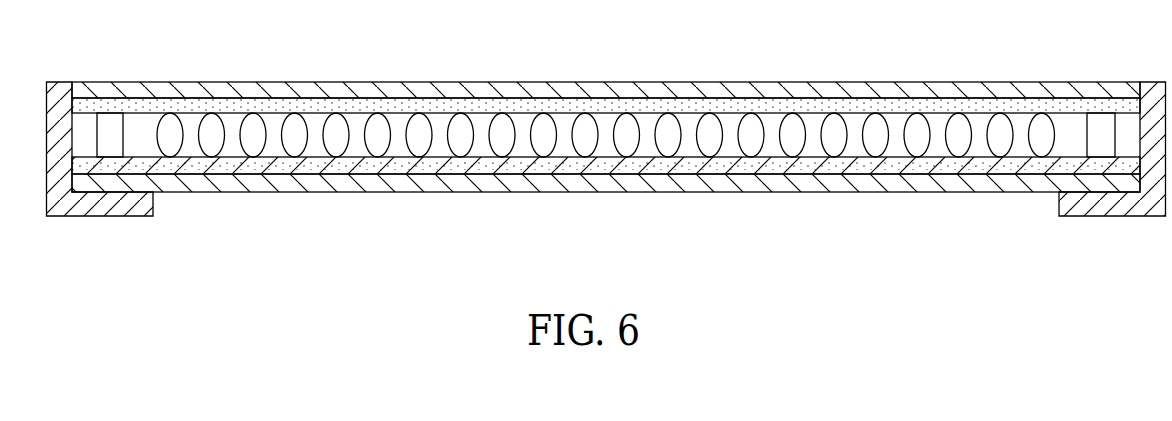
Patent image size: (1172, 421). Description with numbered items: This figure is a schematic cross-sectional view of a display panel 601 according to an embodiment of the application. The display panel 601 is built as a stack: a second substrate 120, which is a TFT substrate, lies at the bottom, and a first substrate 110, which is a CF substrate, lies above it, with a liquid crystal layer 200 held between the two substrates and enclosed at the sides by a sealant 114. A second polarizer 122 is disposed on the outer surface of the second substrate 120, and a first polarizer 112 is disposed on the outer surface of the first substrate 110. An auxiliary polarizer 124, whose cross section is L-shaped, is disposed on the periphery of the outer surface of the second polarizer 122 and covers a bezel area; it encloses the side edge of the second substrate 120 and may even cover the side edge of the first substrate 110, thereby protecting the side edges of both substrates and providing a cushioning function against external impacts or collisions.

The display panel 601 is at (585, 149).
The first substrate 110 is at (118, 104).
The first polarizer 112 is at (153, 96).
The sealant 114 is at (108, 140).
The liquid crystal layer 200 is at (343, 126).
The second substrate 120 is at (177, 189).
The second polarizer 122 is at (212, 192).
The auxiliary polarizer 124 is at (103, 194).